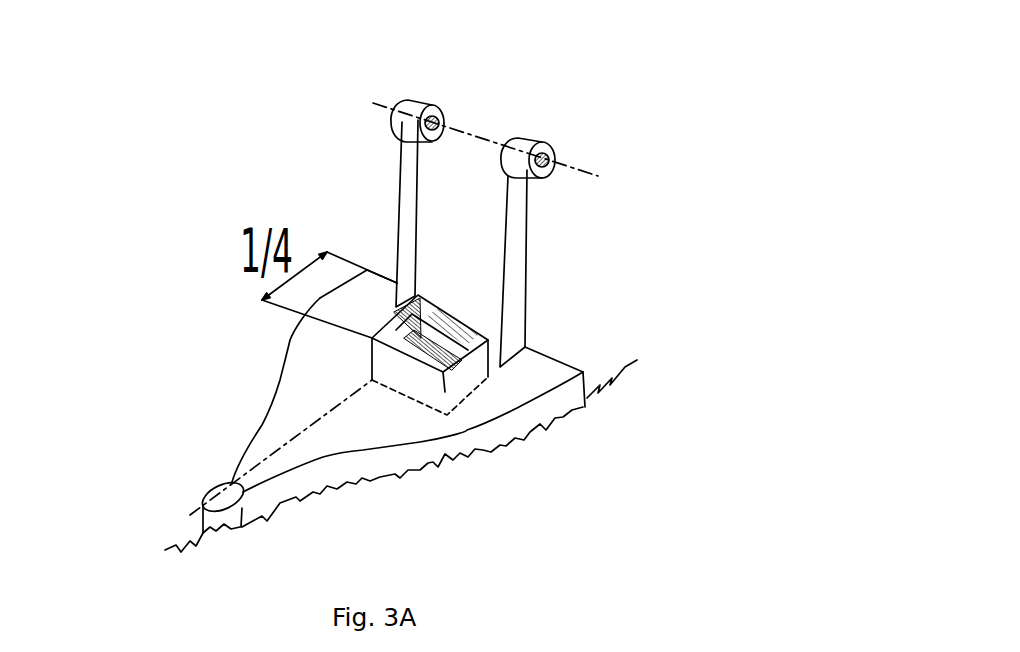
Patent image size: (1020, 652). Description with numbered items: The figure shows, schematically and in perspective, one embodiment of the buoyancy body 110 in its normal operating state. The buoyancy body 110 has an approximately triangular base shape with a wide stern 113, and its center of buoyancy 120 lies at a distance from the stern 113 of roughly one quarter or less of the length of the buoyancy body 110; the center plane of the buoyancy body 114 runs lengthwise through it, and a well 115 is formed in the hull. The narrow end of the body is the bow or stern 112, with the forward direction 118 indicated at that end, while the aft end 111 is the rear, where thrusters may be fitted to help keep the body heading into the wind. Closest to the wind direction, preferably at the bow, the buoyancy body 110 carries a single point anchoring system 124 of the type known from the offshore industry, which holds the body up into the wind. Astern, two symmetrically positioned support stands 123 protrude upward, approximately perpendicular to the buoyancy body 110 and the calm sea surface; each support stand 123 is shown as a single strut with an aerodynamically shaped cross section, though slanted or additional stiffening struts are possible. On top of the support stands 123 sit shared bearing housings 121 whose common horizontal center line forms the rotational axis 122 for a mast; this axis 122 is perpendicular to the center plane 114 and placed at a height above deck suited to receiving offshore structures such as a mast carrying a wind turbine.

The buoyancy body 110 is at (458, 437).
The aft end 111 is at (572, 428).
The bow or stern 112 is at (207, 458).
The stern 113 is at (557, 348).
The centre plane of the buoyancy body 114 is at (274, 398).
The well 115 is at (447, 415).
The forward 118 is at (242, 538).
The center of buoyancy 120 is at (372, 370).
The bearing housing 121 is at (413, 100).
The rotational axis of the mast 122 is at (594, 175).
The support stand 123 is at (400, 202).
The anchoring system 124 is at (205, 493).